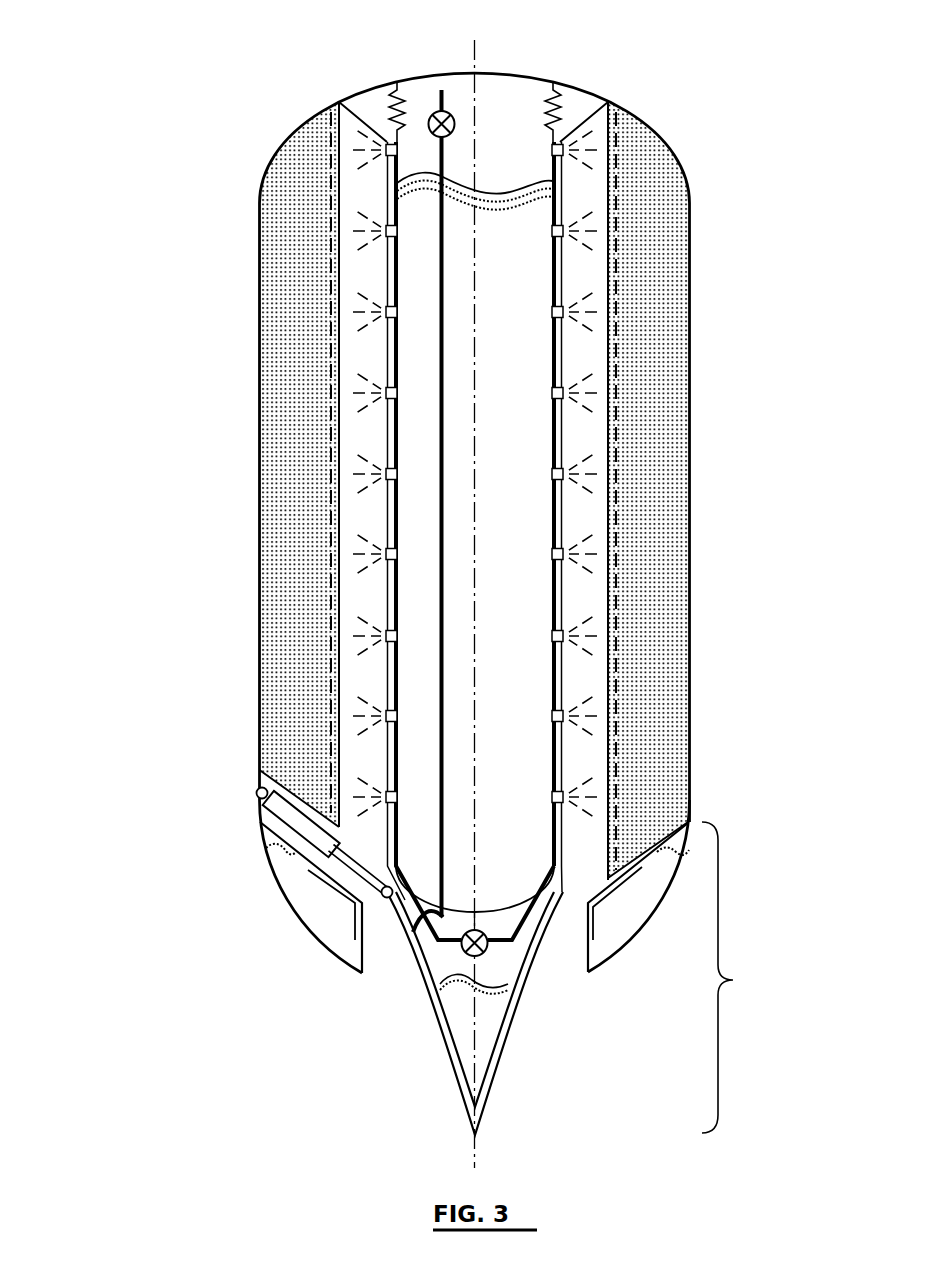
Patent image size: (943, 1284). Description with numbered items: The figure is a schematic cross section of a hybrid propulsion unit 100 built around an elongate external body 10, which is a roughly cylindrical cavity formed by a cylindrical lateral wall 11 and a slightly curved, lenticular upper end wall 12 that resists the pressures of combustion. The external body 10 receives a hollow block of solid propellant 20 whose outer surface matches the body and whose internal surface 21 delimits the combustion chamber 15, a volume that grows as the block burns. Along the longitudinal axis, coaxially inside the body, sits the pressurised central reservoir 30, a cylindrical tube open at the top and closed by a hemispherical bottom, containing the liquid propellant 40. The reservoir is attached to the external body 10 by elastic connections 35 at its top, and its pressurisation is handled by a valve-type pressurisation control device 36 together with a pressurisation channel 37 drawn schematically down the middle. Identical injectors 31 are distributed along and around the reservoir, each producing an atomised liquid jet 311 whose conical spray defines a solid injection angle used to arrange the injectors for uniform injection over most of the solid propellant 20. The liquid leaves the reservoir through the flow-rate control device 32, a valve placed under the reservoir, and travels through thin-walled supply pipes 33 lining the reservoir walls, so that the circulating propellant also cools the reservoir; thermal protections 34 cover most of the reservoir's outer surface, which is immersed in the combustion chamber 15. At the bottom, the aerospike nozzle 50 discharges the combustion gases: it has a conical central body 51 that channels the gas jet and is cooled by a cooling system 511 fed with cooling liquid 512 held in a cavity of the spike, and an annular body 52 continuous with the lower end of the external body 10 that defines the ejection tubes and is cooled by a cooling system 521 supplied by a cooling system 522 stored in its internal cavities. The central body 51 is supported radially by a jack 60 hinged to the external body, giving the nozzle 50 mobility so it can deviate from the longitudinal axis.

The hybrid propulsion unit 100 is at (133, 106).
The external body 10 is at (430, 414).
The cylindrical lateral wall 11 is at (259, 492).
The upper end wall 12 is at (422, 73).
The combustion chamber 15 is at (355, 680).
The solid propellant 20 is at (292, 554).
The internal surface 21 is at (340, 609).
The central reservoir 30 is at (482, 538).
The injector 31 is at (384, 315).
The atomised liquid jet 311 is at (590, 318).
The flow-rate control device 32 is at (463, 948).
The supply pipes 33 is at (528, 927).
The thermal protections 34 is at (565, 602).
The elastic connections 35 is at (386, 97).
The pressurisation control device 36 is at (455, 126).
The pressurisation channel 37 is at (445, 648).
The liquid propellant 40 is at (492, 497).
The nozzle 50 is at (495, 967).
The central body 51 is at (503, 1041).
The cooling system 511 is at (487, 1075).
The cooling liquid 512 is at (470, 1022).
The annular body 52 is at (333, 960).
The cooling system 521 is at (353, 912).
The cooling system 522 is at (297, 890).
The jack 60 is at (285, 810).